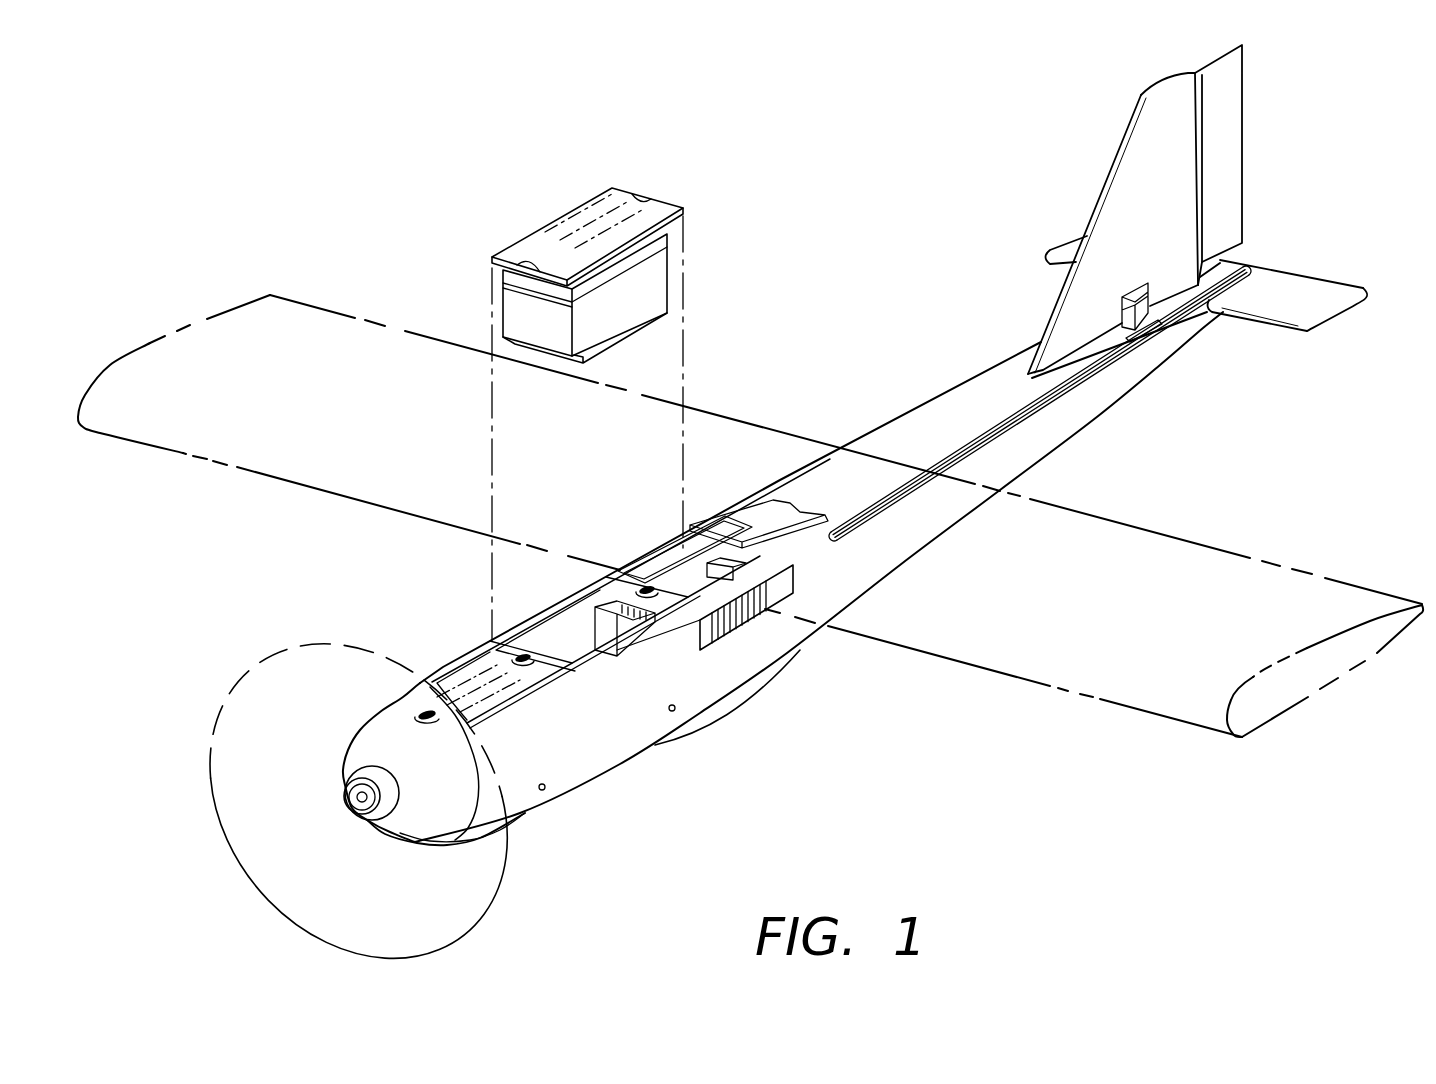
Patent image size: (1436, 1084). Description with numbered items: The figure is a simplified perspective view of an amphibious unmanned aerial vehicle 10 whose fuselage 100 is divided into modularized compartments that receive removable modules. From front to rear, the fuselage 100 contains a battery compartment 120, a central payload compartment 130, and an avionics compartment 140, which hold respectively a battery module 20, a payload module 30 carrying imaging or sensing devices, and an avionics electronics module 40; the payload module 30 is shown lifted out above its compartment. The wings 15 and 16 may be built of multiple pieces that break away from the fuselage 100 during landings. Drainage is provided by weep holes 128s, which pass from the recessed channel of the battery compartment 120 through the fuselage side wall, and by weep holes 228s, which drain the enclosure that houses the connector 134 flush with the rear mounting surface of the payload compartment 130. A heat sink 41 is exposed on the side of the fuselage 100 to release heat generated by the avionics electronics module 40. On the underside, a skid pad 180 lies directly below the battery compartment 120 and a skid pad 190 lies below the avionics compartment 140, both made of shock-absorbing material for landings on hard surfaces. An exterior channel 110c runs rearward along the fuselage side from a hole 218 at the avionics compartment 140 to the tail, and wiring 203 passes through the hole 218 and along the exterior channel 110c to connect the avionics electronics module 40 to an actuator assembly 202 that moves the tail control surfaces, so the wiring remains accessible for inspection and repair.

The amphibious unmanned aerial vehicle 10 is at (368, 280).
The wing 15 is at (1253, 563).
The wing 16 is at (1060, 247).
The battery module 20 is at (473, 663).
The payload module 30 is at (600, 203).
The avionics electronics module 40 is at (758, 510).
The heat sink 41 is at (780, 583).
The fuselage 100 is at (883, 427).
The exterior channel 110c is at (1093, 420).
The battery compartment 120 is at (447, 673).
The weep holes 128s is at (542, 792).
The central payload compartment 130 is at (567, 612).
The connector 134 is at (612, 613).
The avionics compartment 140 is at (648, 557).
The skid pad 180 is at (410, 845).
The skid pad 190 is at (763, 673).
The actuator assembly 202 is at (1127, 293).
The wiring 203 is at (1143, 350).
The hole 218 is at (840, 543).
The weep holes 228s is at (675, 713).